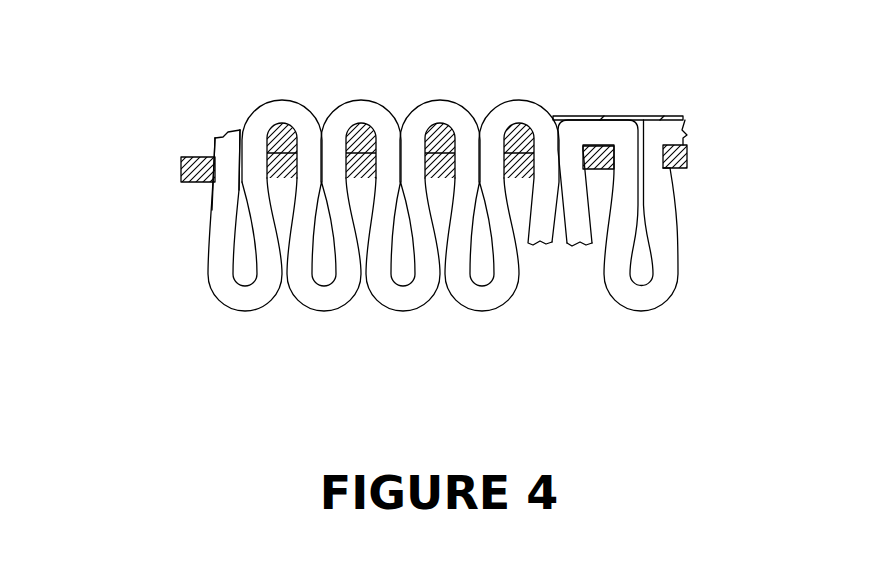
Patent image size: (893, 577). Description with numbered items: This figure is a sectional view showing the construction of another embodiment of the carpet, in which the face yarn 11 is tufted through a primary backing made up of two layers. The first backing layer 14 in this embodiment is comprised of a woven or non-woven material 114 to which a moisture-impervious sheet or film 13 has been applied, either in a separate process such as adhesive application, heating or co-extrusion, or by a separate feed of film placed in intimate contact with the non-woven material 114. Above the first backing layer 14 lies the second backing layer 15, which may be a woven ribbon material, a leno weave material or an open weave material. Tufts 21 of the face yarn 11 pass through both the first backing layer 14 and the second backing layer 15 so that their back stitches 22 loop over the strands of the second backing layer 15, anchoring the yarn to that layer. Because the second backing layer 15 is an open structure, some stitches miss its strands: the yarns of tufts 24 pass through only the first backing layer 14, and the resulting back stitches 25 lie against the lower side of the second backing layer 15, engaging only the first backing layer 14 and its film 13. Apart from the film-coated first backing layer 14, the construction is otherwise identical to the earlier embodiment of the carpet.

The face yarn 11 is at (418, 207).
The moisture-impervious sheet or film 13 is at (197, 158).
The first backing layer 14 is at (695, 143).
The second backing layer 15 is at (437, 120).
The tufts 21 is at (312, 298).
The back stitches 22 is at (352, 117).
The tufts 24 is at (650, 294).
The back stitches 25 is at (662, 135).
The woven or non-woven material 114 is at (207, 185).